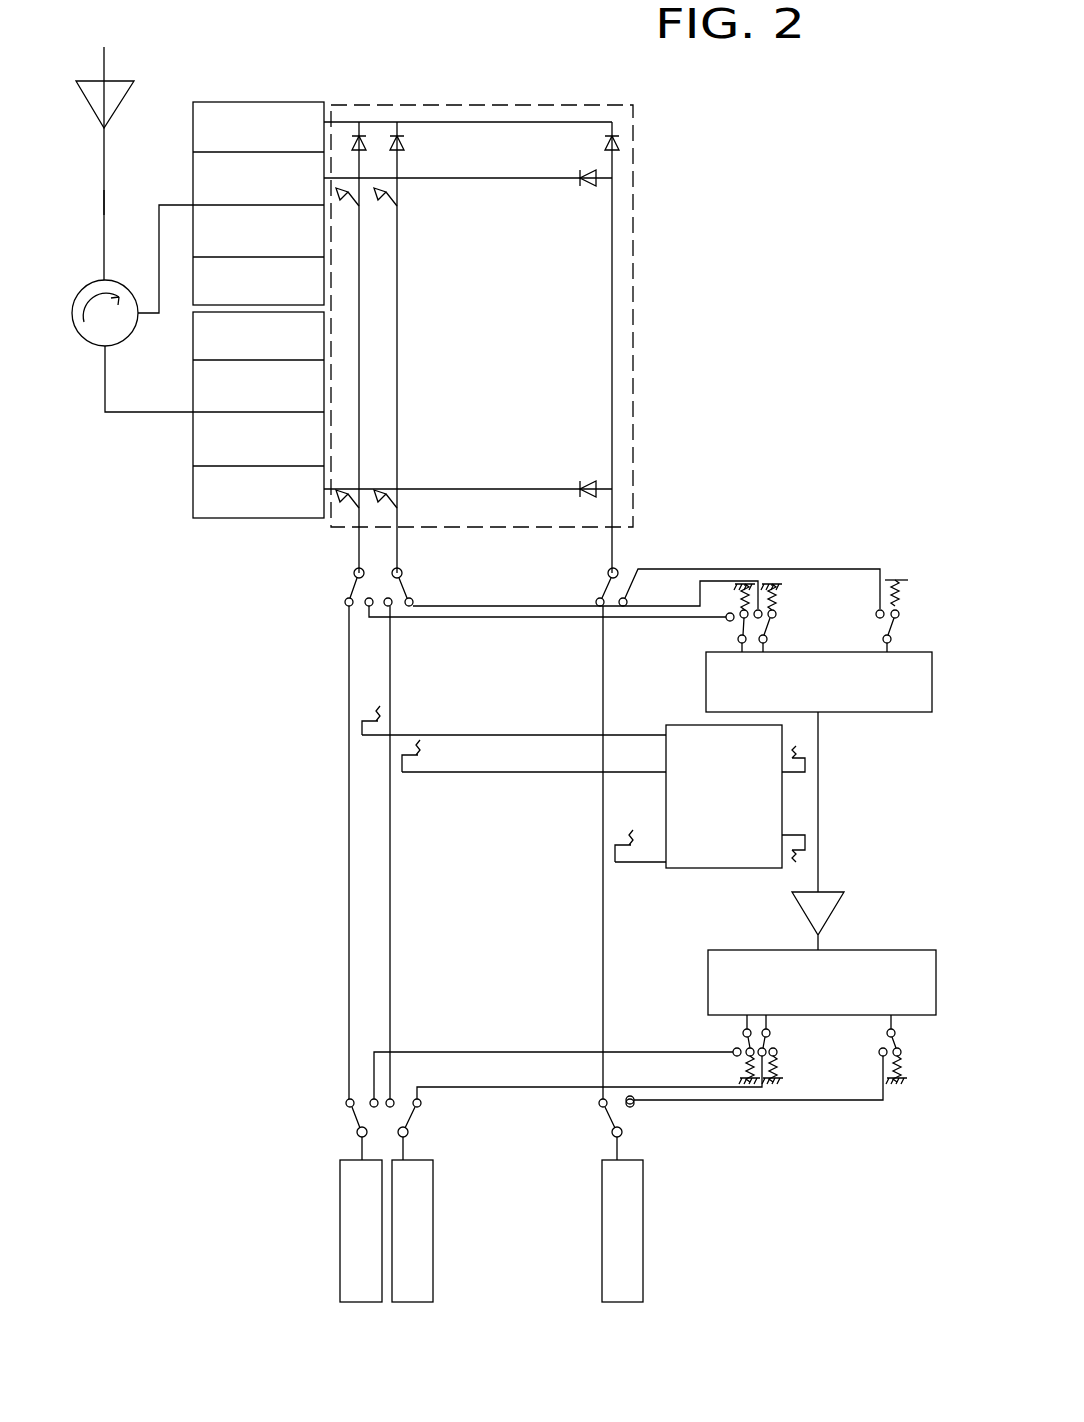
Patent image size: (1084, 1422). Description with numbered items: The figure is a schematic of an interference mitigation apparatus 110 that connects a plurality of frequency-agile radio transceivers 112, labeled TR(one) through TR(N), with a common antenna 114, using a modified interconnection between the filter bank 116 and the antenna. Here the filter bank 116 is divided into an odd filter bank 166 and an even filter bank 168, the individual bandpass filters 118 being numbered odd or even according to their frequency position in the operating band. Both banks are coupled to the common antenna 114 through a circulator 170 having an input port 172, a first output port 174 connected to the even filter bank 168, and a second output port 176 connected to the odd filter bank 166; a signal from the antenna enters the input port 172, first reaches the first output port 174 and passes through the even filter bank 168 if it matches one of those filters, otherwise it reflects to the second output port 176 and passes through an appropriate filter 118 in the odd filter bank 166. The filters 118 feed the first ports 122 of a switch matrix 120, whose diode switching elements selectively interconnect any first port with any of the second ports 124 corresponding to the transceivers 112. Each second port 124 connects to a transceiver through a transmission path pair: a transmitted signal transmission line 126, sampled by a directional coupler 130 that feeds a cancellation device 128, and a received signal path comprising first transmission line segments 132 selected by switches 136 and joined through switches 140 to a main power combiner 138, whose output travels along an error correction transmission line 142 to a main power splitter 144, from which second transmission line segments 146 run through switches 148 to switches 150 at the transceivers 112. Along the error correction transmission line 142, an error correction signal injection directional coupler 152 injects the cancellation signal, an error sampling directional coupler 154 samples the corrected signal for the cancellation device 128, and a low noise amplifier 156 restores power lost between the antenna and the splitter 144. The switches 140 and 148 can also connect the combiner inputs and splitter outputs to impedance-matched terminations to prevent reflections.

The interference mitigation apparatus 110 is at (173, 740).
The frequency-agile radio transceivers 112 is at (340, 1221).
The common antenna 114 is at (105, 151).
The filter bank 116 is at (133, 460).
The filters 118 is at (193, 180).
The switch matrix 120 is at (578, 105).
The first ports 122 is at (381, 188).
The second ports 124 is at (352, 553).
The transmitted signal transmission lines 126 is at (390, 904).
The cancellation device 128 is at (722, 868).
The directional couplers 130 is at (390, 760).
The first transmission line segments 132 is at (805, 569).
The switches 136 is at (347, 598).
The main power combiner 138 is at (706, 684).
The switches 140 is at (738, 639).
The error correction transmission line 142 is at (818, 805).
The main power splitter 144 is at (708, 980).
The second transmission line segments 146 is at (490, 1087).
The switches 148 is at (743, 1033).
The switches 150 is at (357, 1132).
The error correction signal injection directional coupler 152 is at (808, 765).
The error sampling directional coupler 154 is at (808, 838).
The low noise amplifier 156 is at (836, 910).
The odd filter bank 166 is at (250, 102).
The even filter bank 168 is at (220, 518).
The circulator 170 is at (90, 283).
The input port 172 is at (104, 200).
The first output port 174 is at (105, 385).
The second output port 176 is at (159, 250).